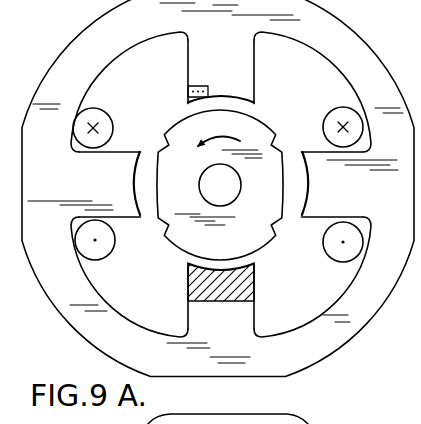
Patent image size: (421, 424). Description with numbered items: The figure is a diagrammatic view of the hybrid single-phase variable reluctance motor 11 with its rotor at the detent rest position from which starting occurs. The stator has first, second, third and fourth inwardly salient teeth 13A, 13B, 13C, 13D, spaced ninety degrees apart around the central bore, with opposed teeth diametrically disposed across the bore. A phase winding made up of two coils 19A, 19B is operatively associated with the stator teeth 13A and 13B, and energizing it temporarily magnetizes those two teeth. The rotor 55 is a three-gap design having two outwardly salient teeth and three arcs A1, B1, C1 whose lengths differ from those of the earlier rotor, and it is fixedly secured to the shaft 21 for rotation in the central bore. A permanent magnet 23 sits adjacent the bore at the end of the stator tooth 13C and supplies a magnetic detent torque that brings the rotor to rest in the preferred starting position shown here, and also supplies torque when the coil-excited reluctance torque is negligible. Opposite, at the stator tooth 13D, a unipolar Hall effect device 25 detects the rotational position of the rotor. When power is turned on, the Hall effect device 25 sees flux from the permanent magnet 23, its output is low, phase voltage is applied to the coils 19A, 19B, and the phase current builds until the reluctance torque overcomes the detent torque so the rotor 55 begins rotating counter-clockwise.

The hybrid single-phase variable reluctance motor 11 is at (364, 30).
The first stator tooth 13A is at (110, 190).
The second stator tooth 13B is at (350, 196).
The third stator tooth 13C is at (242, 346).
The fourth stator tooth 13D is at (233, 75).
The coil 19A is at (109, 114).
The coil 19B is at (338, 106).
The shaft 21 is at (199, 183).
The permanent magnet 23 is at (251, 278).
The Hall effect device 25 is at (187, 93).
The rotor 55 is at (284, 152).
The rotor arc A1 is at (273, 139).
The rotor arc B1 is at (163, 137).
The rotor arc C1 is at (237, 108).